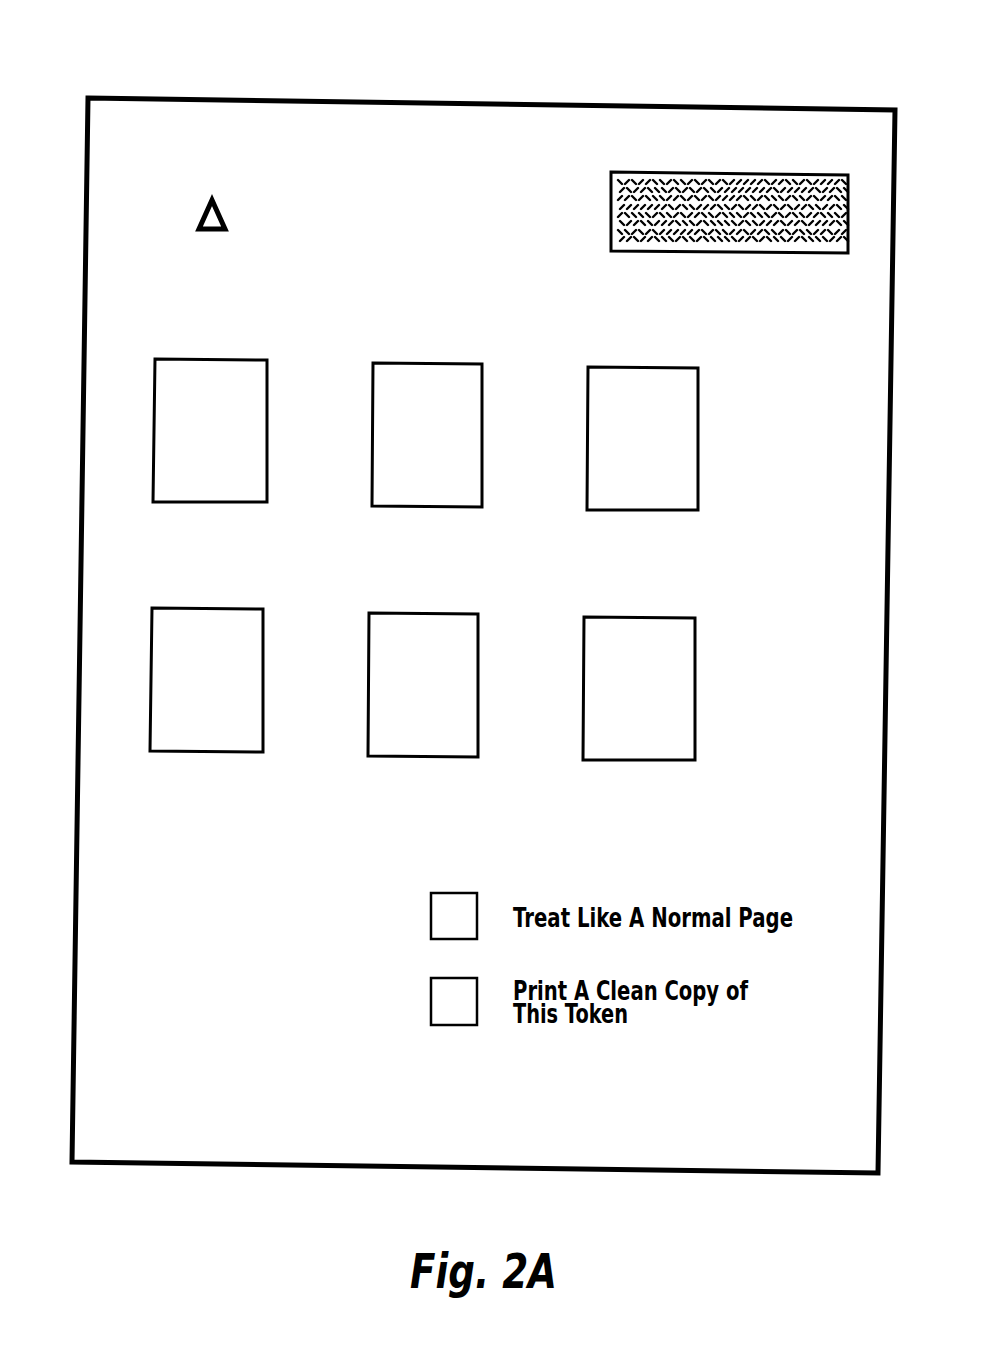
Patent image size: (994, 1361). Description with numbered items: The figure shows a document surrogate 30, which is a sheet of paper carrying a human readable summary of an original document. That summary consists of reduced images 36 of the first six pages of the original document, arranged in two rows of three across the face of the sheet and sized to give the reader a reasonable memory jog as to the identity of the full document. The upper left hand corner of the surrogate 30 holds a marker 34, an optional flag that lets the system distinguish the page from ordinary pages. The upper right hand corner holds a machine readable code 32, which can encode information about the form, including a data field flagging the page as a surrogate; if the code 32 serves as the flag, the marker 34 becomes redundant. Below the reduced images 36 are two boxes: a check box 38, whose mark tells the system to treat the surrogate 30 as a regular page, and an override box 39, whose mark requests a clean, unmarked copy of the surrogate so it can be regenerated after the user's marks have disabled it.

The document surrogate 30 is at (548, 76).
The machine readable code 32 is at (750, 171).
The marker 34 is at (180, 172).
The reduced images 36 is at (212, 359).
The check box 38 is at (440, 893).
The override box 39 is at (440, 978).